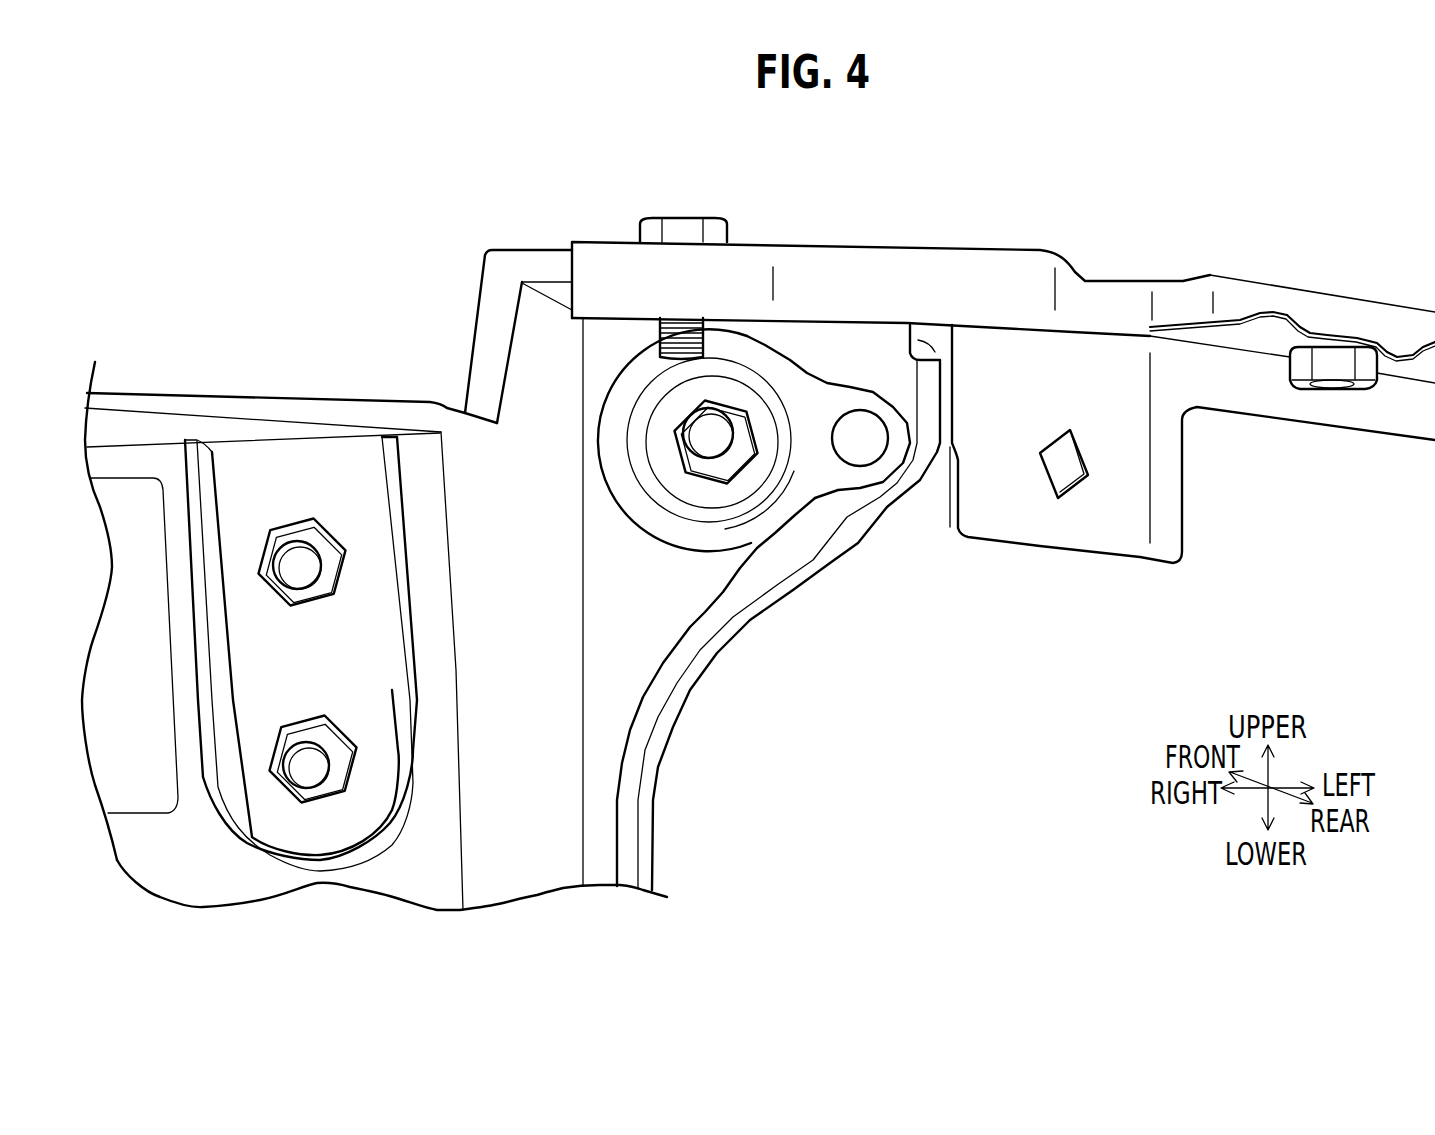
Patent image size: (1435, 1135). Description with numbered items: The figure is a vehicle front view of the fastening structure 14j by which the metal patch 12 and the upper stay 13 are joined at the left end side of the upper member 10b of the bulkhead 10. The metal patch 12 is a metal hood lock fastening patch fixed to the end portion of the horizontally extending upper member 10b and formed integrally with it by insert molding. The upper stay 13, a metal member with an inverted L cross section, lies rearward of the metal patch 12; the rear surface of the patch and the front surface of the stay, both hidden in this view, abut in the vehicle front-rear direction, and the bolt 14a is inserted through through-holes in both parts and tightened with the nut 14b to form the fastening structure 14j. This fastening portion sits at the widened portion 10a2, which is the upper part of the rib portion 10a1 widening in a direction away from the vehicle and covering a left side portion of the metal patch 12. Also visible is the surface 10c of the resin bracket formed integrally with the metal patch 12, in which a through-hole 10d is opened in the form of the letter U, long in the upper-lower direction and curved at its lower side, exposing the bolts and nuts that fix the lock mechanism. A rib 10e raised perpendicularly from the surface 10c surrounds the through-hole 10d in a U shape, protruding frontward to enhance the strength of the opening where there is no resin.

The bulkhead 10 is at (394, 354).
The rib portion 10a1 is at (522, 500).
The widened portion 10a2 is at (855, 350).
The upper member 10b is at (168, 403).
The surface 10c is at (187, 860).
The through-hole 10d is at (440, 712).
The rib 10e is at (405, 812).
The metal patch 12 is at (293, 483).
The upper stay 13 is at (1297, 300).
The bolt 14a is at (703, 427).
The nut 14b is at (733, 413).
The fastening structure 14j is at (665, 289).